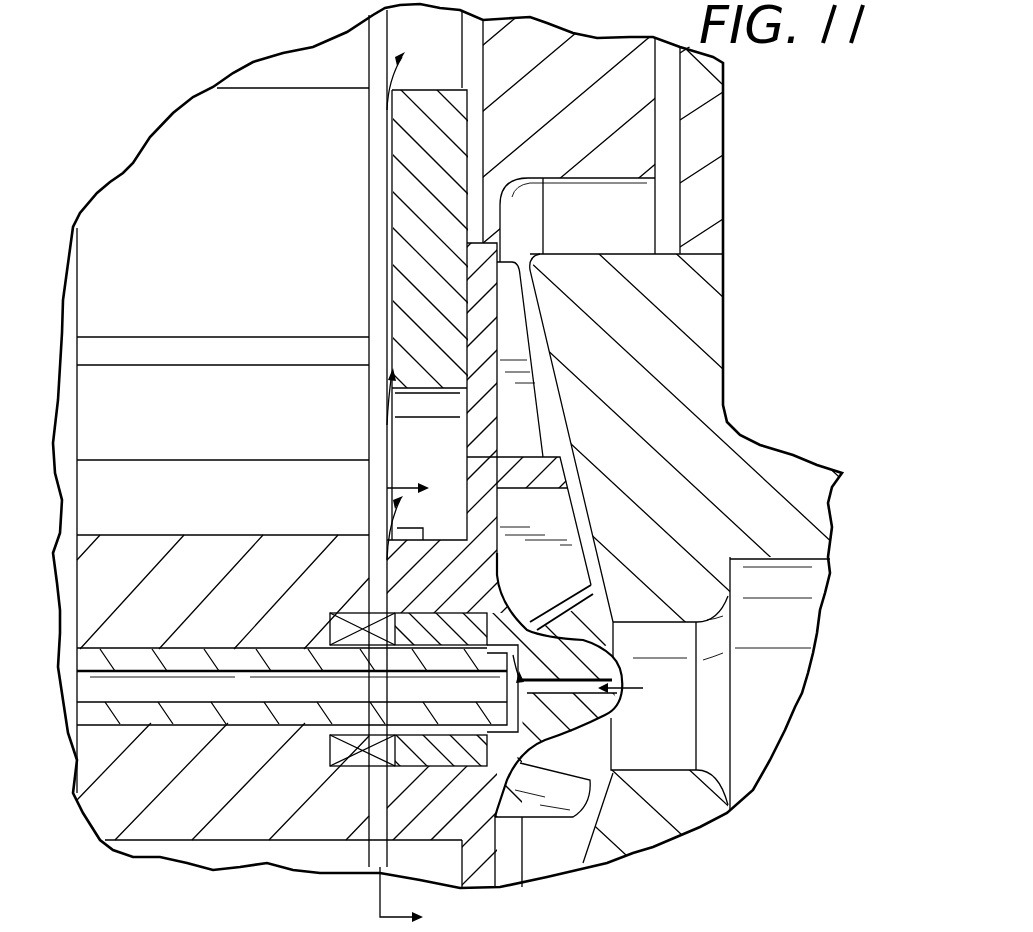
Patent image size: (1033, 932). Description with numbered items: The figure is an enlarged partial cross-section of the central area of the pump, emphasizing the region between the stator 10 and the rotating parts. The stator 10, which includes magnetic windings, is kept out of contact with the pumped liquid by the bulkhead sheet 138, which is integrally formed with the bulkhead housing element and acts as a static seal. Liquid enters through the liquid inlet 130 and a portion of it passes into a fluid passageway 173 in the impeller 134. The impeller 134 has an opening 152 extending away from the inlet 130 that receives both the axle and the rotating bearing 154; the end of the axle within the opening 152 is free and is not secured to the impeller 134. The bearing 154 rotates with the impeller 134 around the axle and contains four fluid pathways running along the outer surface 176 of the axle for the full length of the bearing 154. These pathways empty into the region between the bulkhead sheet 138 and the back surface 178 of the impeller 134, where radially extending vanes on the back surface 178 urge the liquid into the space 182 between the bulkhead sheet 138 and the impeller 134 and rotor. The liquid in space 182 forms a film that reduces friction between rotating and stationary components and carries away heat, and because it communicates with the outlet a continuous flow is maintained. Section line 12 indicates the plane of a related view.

The stator 10 is at (90, 500).
The section line 12 is at (420, 704).
The liquid inlet 130 is at (787, 687).
The impeller 134 is at (597, 830).
The bulkhead sheet 138 is at (392, 290).
The opening 152 is at (565, 632).
The rotating bearing 154 is at (452, 752).
The fluid passageway 173 is at (625, 690).
The outer surface 176 is at (420, 752).
The back surface 178 is at (387, 597).
The space 182 is at (387, 427).